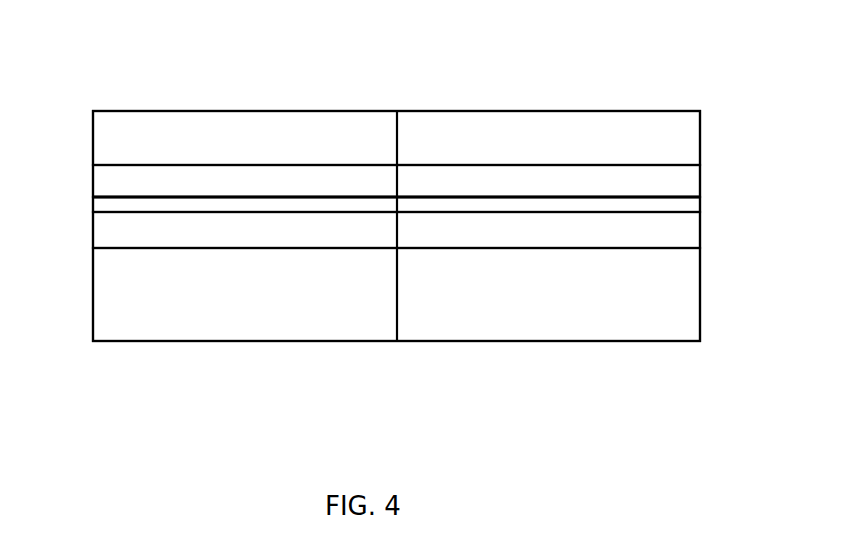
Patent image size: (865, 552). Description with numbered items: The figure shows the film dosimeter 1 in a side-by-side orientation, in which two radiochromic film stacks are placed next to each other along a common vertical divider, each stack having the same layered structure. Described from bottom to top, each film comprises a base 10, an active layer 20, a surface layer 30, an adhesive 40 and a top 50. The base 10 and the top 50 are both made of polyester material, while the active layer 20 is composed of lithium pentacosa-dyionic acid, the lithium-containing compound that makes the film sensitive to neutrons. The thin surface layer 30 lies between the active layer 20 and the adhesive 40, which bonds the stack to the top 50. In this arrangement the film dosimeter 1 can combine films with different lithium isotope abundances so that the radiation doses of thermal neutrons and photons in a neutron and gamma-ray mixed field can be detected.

The film dosimeter 1 is at (718, 75).
The base 10 is at (396, 294).
The active layer 20 is at (396, 230).
The surface layer 30 is at (103, 204).
The adhesive 40 is at (396, 181).
The top 50 is at (396, 138).